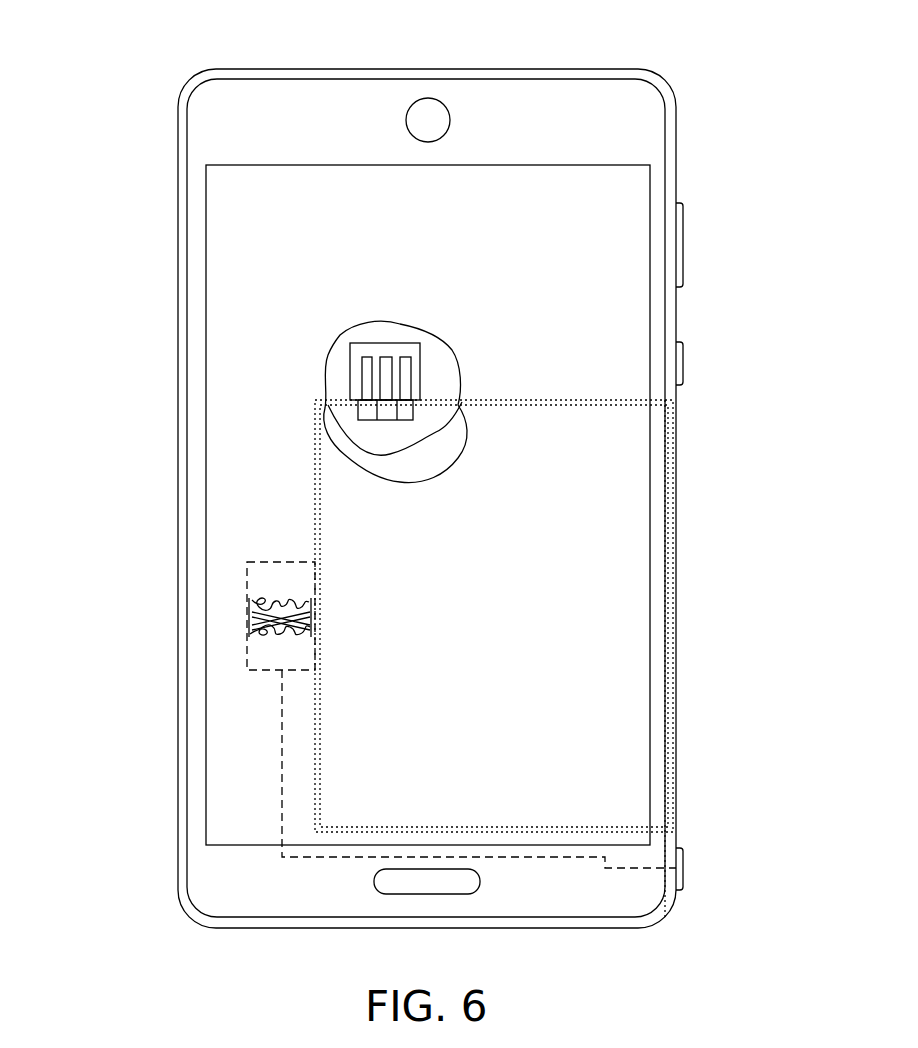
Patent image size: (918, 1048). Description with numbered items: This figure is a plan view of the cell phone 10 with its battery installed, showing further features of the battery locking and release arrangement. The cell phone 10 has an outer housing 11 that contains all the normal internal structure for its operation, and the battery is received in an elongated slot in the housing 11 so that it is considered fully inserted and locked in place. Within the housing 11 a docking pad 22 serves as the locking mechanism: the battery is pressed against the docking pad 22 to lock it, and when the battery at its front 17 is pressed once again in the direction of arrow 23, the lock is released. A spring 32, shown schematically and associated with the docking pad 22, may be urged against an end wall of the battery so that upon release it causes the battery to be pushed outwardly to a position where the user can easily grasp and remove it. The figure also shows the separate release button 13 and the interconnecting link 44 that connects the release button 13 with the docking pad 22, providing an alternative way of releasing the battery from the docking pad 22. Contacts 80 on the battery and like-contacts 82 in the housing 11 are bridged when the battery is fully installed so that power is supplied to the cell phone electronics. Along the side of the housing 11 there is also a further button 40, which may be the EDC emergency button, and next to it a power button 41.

The cell phone 10 is at (157, 728).
The outer housing 11 is at (575, 118).
The release button 13 is at (683, 865).
The front of the battery 17 is at (672, 690).
The docking pad 22 is at (268, 650).
The arrow 23 is at (676, 600).
The spring 32 is at (255, 595).
The button 40 is at (683, 363).
The power button 41 is at (682, 257).
The interconnecting link 44 is at (280, 790).
The contacts 80 is at (383, 420).
The like-contacts 82 is at (363, 363).